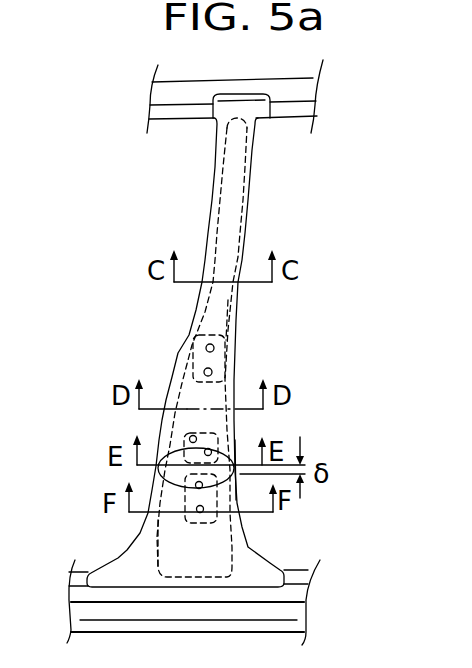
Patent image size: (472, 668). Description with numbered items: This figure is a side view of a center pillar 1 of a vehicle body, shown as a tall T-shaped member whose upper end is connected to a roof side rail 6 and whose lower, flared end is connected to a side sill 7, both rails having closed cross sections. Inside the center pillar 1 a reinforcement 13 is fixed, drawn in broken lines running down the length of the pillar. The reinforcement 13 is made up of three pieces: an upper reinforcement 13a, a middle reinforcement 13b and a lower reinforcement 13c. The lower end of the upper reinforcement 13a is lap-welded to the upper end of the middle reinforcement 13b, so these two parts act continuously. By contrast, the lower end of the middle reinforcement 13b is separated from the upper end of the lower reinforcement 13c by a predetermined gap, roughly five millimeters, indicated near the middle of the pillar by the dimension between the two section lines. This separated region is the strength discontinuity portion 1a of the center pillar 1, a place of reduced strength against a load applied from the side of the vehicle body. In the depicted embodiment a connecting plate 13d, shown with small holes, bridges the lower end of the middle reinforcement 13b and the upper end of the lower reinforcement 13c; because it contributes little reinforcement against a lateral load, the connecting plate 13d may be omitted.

The center pillar 1 is at (250, 214).
The strength discontinuity portion 1a is at (243, 452).
The roof side rail 6 is at (176, 125).
The side sill 7 is at (301, 596).
The reinforcement 13 is at (231, 249).
The upper reinforcement 13a is at (228, 312).
The middle reinforcement 13b is at (178, 377).
The lower reinforcement 13c is at (155, 550).
The connecting plate 13d is at (172, 440).